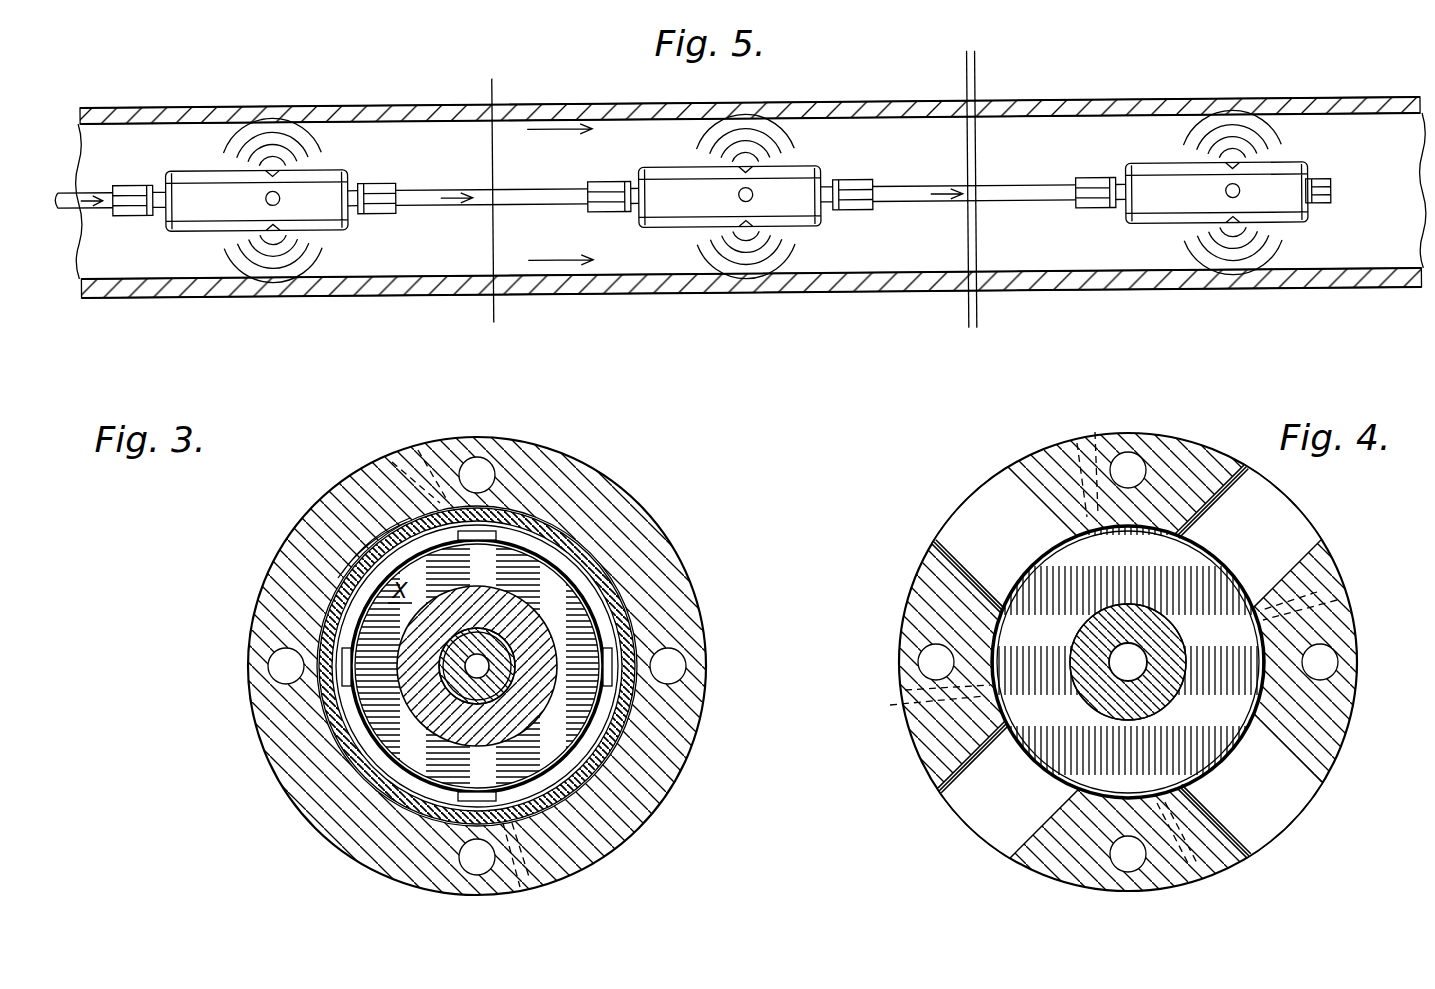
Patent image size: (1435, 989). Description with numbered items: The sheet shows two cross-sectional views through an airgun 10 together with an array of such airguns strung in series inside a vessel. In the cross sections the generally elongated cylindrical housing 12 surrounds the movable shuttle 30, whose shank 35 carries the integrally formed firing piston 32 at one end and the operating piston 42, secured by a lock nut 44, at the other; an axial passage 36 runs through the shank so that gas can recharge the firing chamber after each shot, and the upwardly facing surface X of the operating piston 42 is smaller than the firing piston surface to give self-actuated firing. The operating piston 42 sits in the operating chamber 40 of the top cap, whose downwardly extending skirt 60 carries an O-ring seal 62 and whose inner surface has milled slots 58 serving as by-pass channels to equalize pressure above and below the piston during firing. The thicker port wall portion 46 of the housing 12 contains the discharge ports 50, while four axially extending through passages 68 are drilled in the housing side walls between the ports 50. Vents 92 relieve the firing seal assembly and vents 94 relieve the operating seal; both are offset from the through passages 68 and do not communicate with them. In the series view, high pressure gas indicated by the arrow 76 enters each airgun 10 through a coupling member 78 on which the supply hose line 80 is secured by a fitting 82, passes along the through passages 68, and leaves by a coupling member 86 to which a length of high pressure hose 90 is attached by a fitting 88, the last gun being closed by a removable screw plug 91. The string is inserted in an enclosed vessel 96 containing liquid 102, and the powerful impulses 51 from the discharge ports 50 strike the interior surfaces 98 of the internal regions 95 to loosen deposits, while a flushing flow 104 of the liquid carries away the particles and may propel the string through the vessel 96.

In FIG. 5, the airgun 10 is at (345, 171).
In FIG. 3, the cylindrical housing 12 is at (640, 505).
In FIG. 4, the cylindrical housing 12 is at (1340, 582).
In FIG. 3, the shuttle 30 is at (430, 673).
In FIG. 4, the shuttle 30 is at (1204, 640).
In FIG. 4, the firing piston 32 is at (1198, 673).
In FIG. 3, the shuttle shank 35 is at (447, 674).
In FIG. 4, the shuttle shank 35 is at (1105, 612).
In FIG. 3, the axial passage 36 is at (470, 674).
In FIG. 4, the axial passage 36 is at (1118, 680).
In FIG. 3, the operating chamber 40 is at (583, 580).
In FIG. 3, the operating piston 42 is at (578, 503).
In FIG. 3, the lock nut 44 is at (532, 622).
In FIG. 4, the port wall portion 46 is at (1050, 462).
In FIG. 5, the discharge ports 50 is at (268, 172).
In FIG. 4, the discharge ports 50 is at (1012, 486).
In FIG. 5, the impulses 51 is at (272, 150).
In FIG. 3, the milled slots 58 is at (516, 515).
In FIG. 3, the skirt 60 is at (596, 718).
In FIG. 3, the O-ring seal 62 is at (340, 566).
In FIG. 3, the axially extending through passages 68 is at (490, 467).
In FIG. 4, the axially extending through passages 68 is at (1145, 465).
In FIG. 5, the source of high pressure gas 76 is at (88, 209).
In FIG. 5, the coupling member 78 is at (172, 226).
In FIG. 5, the high pressure hose supply line 80 is at (84, 200).
In FIG. 5, the fitting 82 is at (132, 186).
In FIG. 5, the coupling member 86 is at (352, 224).
In FIG. 5, the fitting 88 is at (385, 186).
In FIG. 5, the high pressure hose 90 is at (527, 192).
In FIG. 5, the removable screw plug 91 is at (1330, 197).
In FIG. 4, the vents 92 is at (1097, 432).
In FIG. 3, the vents 94 is at (392, 458).
In FIG. 5, the internal regions 95 is at (999, 263).
In FIG. 5, the enclosed vessels 96 is at (867, 108).
In FIG. 5, the interior surfaces 98 is at (918, 279).
In FIG. 5, the liquid 102 is at (590, 152).
In FIG. 5, the flushing flow 104 is at (550, 124).